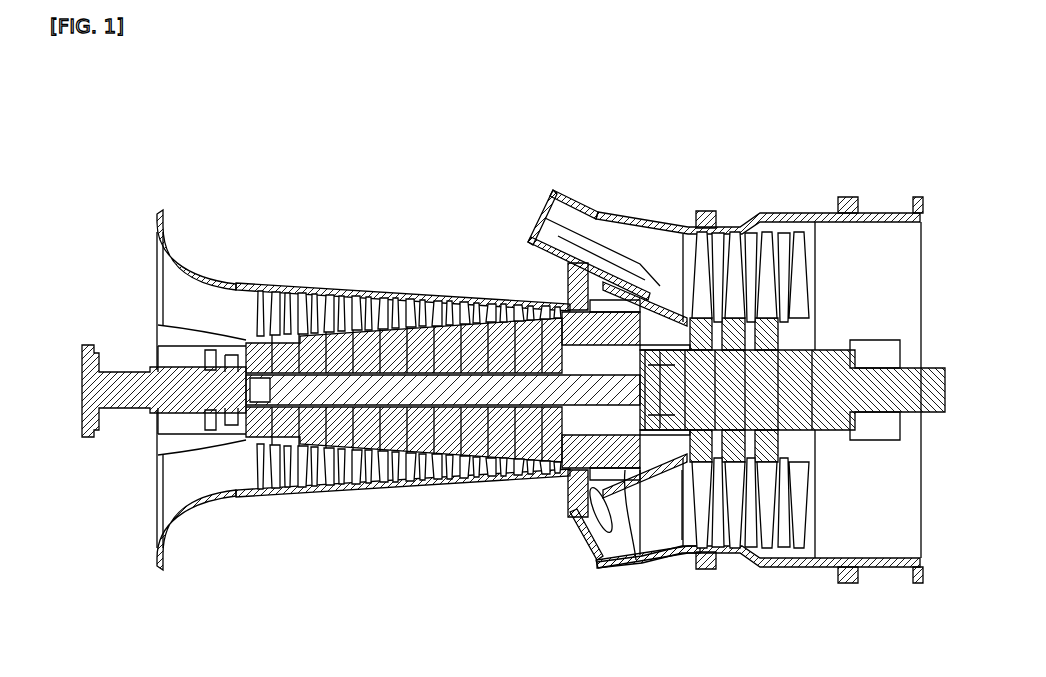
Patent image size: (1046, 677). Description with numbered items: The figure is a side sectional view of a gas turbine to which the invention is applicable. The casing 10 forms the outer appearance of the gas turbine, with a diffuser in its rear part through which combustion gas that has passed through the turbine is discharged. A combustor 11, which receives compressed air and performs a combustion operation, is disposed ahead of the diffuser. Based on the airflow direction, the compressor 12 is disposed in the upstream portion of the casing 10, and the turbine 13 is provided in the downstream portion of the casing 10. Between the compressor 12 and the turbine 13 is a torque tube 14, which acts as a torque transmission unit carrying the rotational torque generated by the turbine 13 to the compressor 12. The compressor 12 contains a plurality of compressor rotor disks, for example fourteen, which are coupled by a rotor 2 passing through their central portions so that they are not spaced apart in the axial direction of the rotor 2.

The rotor 2 is at (158, 437).
The casing 10 is at (393, 293).
The combustor 11 is at (567, 176).
The compressor 12 is at (215, 430).
The turbine 13 is at (815, 603).
The torque tube 14 is at (634, 435).